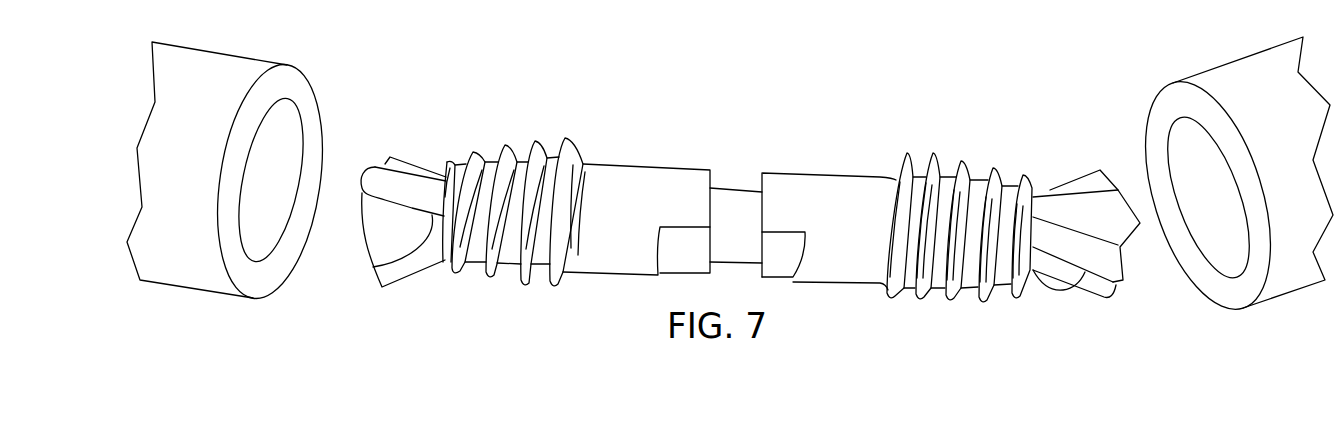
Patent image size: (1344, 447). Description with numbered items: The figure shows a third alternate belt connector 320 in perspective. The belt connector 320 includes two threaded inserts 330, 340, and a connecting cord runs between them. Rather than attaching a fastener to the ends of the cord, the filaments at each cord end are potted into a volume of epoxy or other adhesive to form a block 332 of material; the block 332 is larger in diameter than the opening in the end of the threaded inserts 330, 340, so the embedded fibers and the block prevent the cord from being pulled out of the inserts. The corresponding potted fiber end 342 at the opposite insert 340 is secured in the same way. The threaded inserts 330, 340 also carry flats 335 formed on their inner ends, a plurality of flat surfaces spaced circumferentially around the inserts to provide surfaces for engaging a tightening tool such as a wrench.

The belt connector 320 is at (817, 148).
The threaded insert 330 is at (533, 142).
The block 332 is at (407, 162).
The flats 335 is at (790, 253).
The threaded insert 340 is at (973, 180).
The second cable end 342 is at (1050, 190).